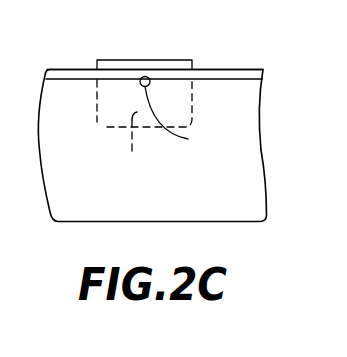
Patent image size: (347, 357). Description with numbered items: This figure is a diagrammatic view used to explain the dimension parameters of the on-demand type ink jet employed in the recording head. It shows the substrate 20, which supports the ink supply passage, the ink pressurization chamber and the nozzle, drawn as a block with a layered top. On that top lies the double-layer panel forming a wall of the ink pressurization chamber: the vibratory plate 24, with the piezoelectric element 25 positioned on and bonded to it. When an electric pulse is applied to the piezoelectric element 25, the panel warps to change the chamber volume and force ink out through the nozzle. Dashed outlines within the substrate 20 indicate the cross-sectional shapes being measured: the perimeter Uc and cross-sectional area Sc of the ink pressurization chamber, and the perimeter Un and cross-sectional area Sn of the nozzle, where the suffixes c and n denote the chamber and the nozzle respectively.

The substrate 20 is at (255, 200).
The vibratory plate 24 is at (73, 74).
The piezoelectric element 25 is at (170, 59).
The distance around cross-sectional shape of ink pressurization chamber Uc is at (98, 123).
The cross-sectional area of ink pressurization chamber Sc is at (135, 147).
The distance around cross-sectional shape of nozzle Un is at (150, 82).
The cross-sectional area of nozzle Sn is at (188, 127).